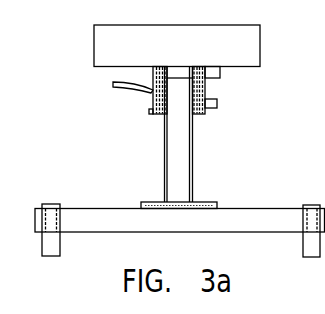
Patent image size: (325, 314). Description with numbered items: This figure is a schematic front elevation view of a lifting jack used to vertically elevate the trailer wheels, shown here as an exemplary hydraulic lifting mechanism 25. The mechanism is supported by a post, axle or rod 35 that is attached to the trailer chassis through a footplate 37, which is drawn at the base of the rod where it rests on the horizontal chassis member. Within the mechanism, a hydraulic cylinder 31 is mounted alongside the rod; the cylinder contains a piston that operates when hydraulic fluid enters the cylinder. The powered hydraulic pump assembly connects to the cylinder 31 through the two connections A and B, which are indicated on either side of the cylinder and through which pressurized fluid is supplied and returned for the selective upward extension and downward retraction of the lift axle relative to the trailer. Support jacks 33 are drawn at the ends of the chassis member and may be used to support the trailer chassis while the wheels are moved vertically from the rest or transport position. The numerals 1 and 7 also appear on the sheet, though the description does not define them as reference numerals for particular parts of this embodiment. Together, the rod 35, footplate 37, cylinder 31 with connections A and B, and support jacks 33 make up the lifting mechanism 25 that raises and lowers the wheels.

The lifting apparatus 1 is at (209, 63).
The support beam 7 is at (128, 206).
The hydraulic lifting mechanism 25 is at (199, 109).
The hydraulic cylinder 31 is at (154, 113).
The support jack 33 is at (52, 205).
The post, axle or rod 35 is at (192, 147).
The footplate 37 is at (207, 202).
The connection A is at (127, 89).
The connection B is at (217, 100).